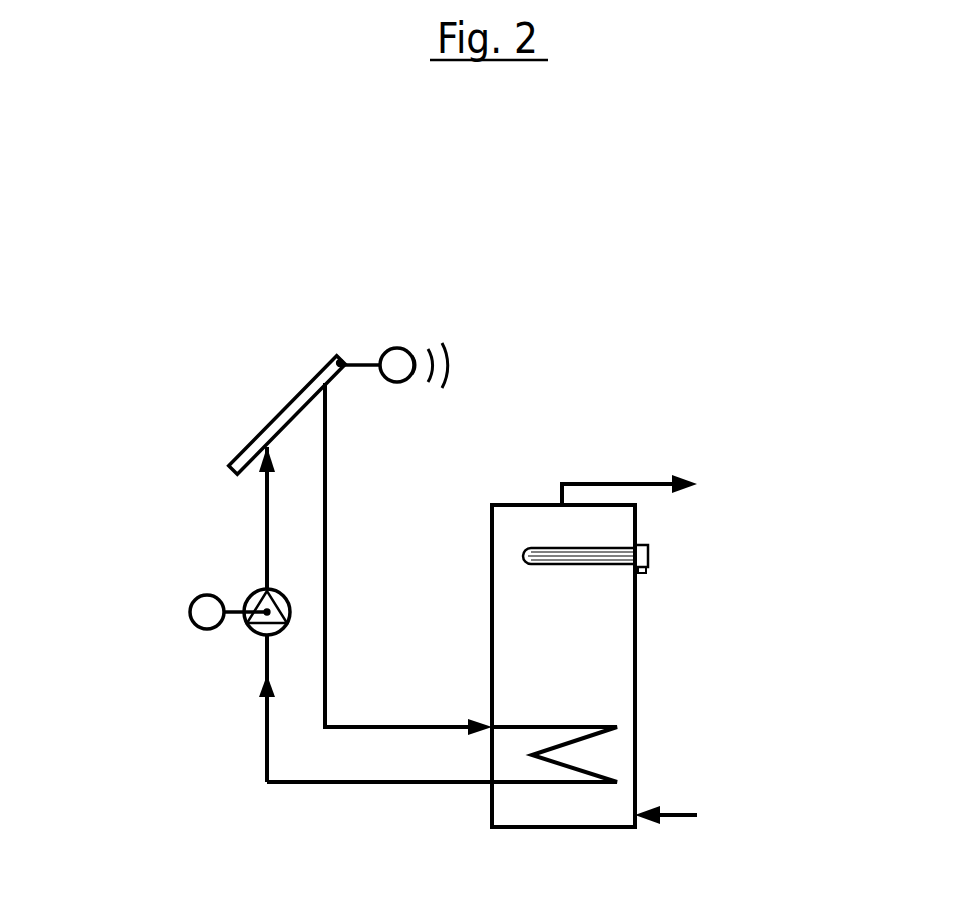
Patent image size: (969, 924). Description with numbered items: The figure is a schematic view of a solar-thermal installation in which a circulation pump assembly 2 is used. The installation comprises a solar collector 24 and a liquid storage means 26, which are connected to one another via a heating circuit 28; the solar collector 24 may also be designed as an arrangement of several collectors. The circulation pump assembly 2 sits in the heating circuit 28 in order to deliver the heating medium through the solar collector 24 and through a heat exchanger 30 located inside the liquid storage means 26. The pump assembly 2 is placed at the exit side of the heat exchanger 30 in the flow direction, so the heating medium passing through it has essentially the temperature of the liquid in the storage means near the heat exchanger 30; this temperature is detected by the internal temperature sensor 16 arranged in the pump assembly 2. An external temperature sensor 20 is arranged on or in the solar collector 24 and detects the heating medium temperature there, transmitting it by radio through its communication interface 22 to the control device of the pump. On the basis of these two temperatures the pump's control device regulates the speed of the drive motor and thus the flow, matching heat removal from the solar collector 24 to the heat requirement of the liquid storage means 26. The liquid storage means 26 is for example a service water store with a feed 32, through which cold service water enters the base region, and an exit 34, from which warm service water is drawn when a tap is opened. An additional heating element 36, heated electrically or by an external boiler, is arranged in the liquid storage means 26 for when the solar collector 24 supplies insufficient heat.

The circulation pump assembly 2 is at (255, 635).
The internal temperature sensor 16 is at (190, 615).
The external temperature sensor 20 is at (400, 349).
The communication interface 22 is at (408, 373).
The solar collector 24 is at (277, 428).
The liquid storage means 26 is at (635, 643).
The heating circuit 28 is at (325, 523).
The heat exchanger 30 is at (588, 725).
The feed 32 is at (679, 812).
The exit 34 is at (623, 483).
The additional heating element 36 is at (649, 553).